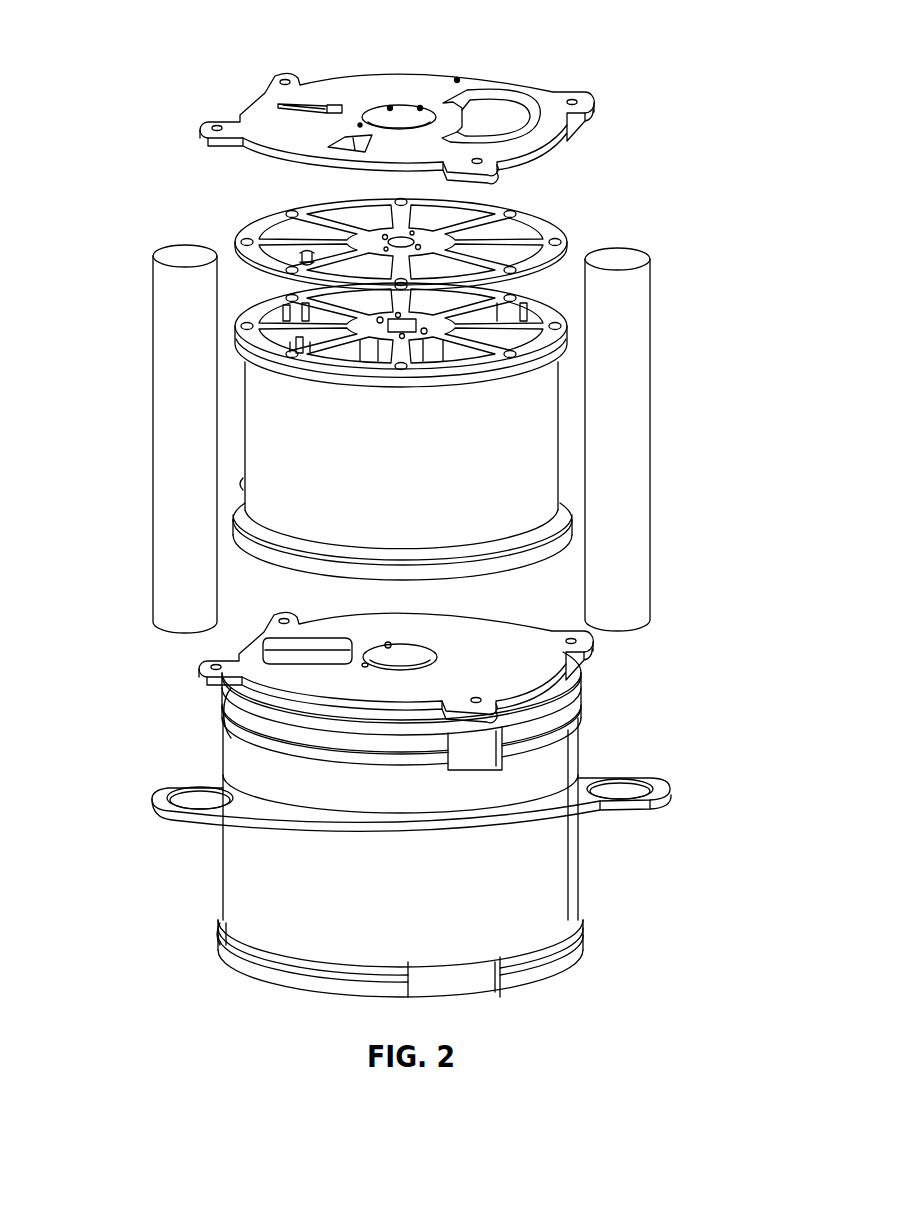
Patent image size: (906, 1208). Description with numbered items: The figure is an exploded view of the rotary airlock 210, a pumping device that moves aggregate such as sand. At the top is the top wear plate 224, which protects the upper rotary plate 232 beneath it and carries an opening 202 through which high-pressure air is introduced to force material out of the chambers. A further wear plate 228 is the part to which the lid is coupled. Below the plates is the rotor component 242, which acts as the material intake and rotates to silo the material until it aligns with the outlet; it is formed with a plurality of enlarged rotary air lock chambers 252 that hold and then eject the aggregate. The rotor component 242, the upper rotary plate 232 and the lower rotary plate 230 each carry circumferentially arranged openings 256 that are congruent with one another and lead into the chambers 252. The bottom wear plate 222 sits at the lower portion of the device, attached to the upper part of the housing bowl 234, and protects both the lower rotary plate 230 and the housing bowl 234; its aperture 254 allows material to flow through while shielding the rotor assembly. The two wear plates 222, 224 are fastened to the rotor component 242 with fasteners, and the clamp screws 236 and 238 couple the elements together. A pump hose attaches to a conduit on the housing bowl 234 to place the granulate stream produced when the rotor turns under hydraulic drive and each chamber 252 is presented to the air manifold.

The rotary airlock 210 is at (186, 48).
The opening 202 is at (482, 115).
The top wear plate 224 is at (553, 103).
The wear plate 228 is at (233, 243).
The upper rotary plate 232 is at (567, 340).
The rotary air lock chamber 252 is at (522, 335).
The openings 256 is at (270, 315).
The rotor component 242 is at (544, 465).
The lower rotary plate 230 is at (547, 549).
The clamp screw 236 is at (165, 475).
The clamp screw 238 is at (640, 470).
The bottom wear plate 222 is at (587, 640).
The aperture 254 is at (223, 713).
The housing bowl 234 is at (550, 868).